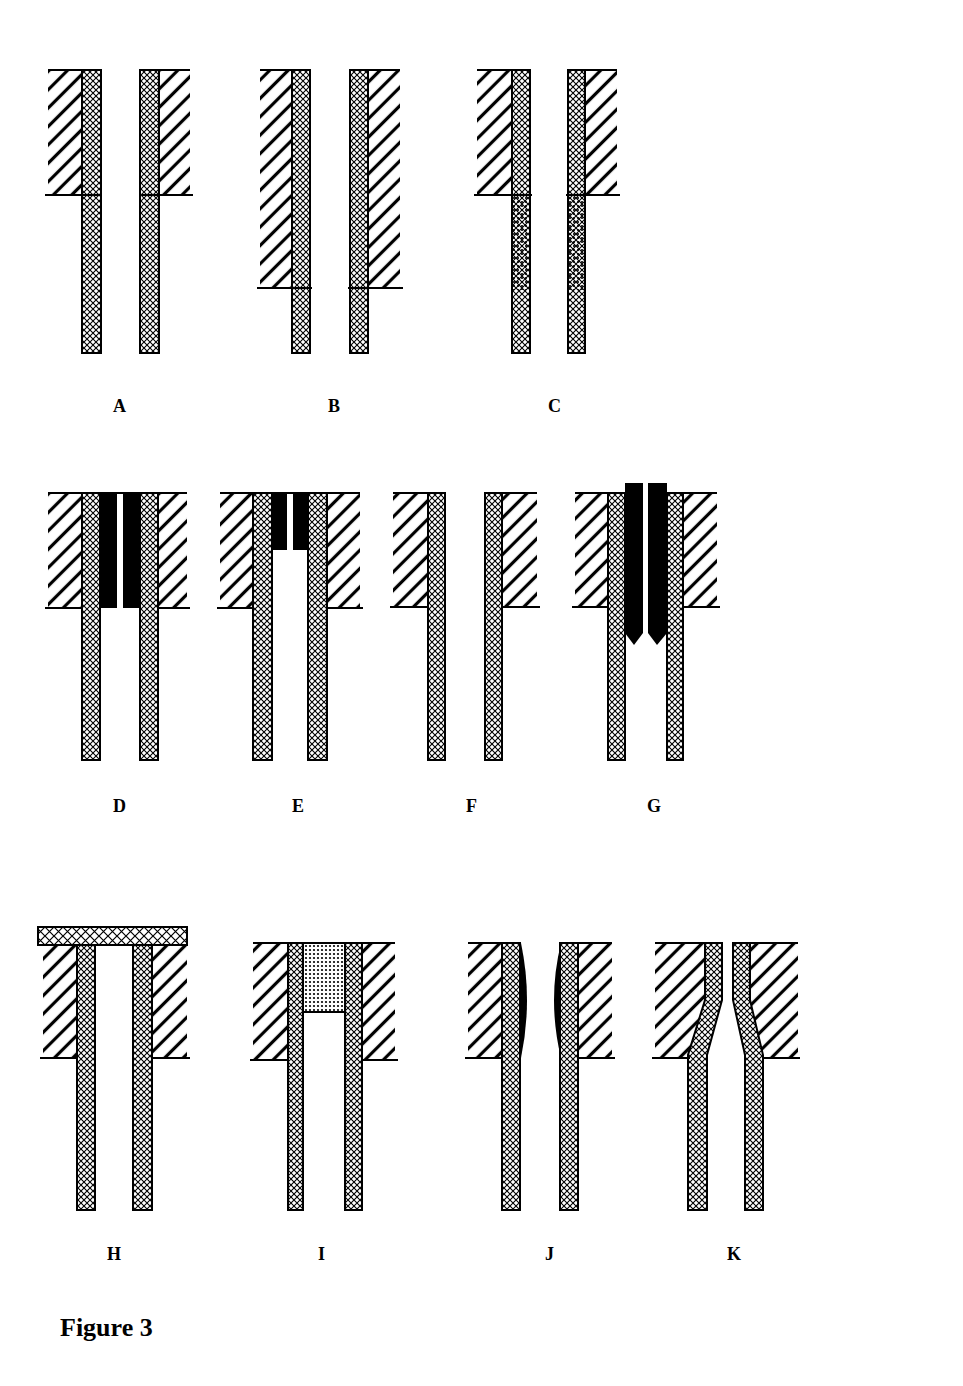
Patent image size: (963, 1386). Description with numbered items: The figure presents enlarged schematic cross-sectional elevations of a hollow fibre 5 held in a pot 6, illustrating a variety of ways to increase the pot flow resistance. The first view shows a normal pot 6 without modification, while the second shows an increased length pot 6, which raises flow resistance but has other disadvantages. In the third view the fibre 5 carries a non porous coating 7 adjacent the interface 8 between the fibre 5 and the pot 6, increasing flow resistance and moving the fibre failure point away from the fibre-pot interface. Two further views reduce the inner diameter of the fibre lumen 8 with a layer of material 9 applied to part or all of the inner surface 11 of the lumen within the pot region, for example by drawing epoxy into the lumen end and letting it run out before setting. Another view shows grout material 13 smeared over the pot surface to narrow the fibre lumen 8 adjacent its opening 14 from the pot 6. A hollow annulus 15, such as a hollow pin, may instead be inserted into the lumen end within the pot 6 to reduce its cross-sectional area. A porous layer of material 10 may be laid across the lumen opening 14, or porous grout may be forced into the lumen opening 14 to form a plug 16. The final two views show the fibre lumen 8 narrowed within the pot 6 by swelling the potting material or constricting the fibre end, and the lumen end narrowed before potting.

In FIG. 3A, the fibre 5 is at (163, 277).
In FIG. 3B, the fibre 5 is at (370, 317).
In FIG. 3C, the fibre 5 is at (531, 97).
In FIG. 3D, the fibre 5 is at (157, 673).
In FIG. 3E, the fibre 5 is at (327, 673).
In FIG. 3F, the fibre 5 is at (503, 663).
In FIG. 3G, the fibre 5 is at (680, 677).
In FIG. 3H, the fibre 5 is at (153, 1117).
In FIG. 3I, the fibre 5 is at (360, 1123).
In FIG. 3J, the fibre 5 is at (578, 1117).
In FIG. 3K, the fibre 5 is at (767, 1090).
In FIG. 3A, the pot 6 is at (177, 97).
In FIG. 3B, the pot 6 is at (393, 147).
In FIG. 3C, the pot 6 is at (613, 107).
In FIG. 3D, the pot 6 is at (187, 530).
In FIG. 3E, the pot 6 is at (363, 527).
In FIG. 3F, the pot 6 is at (537, 510).
In FIG. 3G, the pot 6 is at (717, 537).
In FIG. 3H, the pot 6 is at (180, 990).
In FIG. 3I, the pot 6 is at (383, 990).
In FIG. 3J, the pot 6 is at (597, 993).
In FIG. 3K, the pot 6 is at (783, 993).
In FIG. 3C, the non porous coating 7 is at (587, 240).
In FIG. 3D, the fibre lumen 8 is at (124, 756).
In FIG. 3E, the fibre lumen 8 is at (294, 758).
In FIG. 3F, the fibre lumen 8 is at (467, 757).
In FIG. 3G, the fibre lumen 8 is at (652, 763).
In FIG. 3H, the fibre lumen 8 is at (112, 1210).
In FIG. 3I, the fibre lumen 8 is at (328, 1216).
In FIG. 3J, the fibre lumen 8 is at (552, 1216).
In FIG. 3K, the fibre lumen 8 is at (743, 1211).
In FIG. 3D, the layer of material 9 is at (113, 493).
In FIG. 3E, the layer of material 9 is at (273, 493).
In FIG. 3H, the porous layer of material 10 is at (57, 893).
In FIG. 3D, the inner surface 11 is at (110, 633).
In FIG. 3E, the inner surface 11 is at (275, 575).
In FIG. 3F, the grout material 13 is at (480, 490).
In FIG. 3F, the lumen opening 14 is at (465, 480).
In FIG. 3H, the lumen opening 14 is at (122, 960).
In FIG. 3I, the lumen opening 14 is at (326, 1032).
In FIG. 3J, the lumen opening 14 is at (546, 935).
In FIG. 3K, the lumen opening 14 is at (736, 928).
In FIG. 3G, the hollow annulus 15 is at (657, 483).
In FIG. 3I, the plug 16 is at (342, 897).